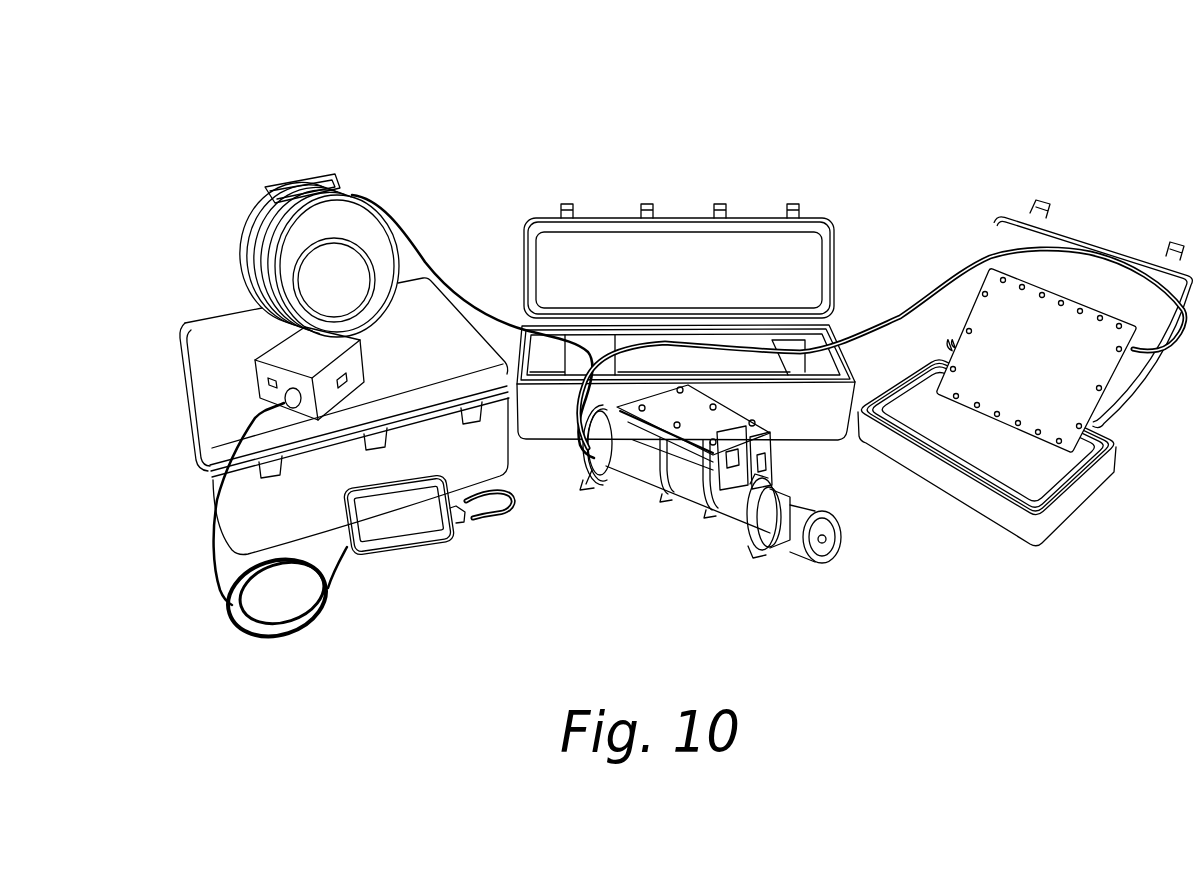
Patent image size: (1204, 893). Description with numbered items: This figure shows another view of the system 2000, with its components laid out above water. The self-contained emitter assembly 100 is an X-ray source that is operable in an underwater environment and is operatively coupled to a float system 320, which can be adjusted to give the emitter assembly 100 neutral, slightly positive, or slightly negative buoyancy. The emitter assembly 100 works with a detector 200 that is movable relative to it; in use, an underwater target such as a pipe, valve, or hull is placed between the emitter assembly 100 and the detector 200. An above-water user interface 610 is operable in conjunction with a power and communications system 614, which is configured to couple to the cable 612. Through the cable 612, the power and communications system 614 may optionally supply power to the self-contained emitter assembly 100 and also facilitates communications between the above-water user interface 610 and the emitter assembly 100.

The system 2000 is at (688, 140).
The cable 612 is at (423, 262).
The power and communications system 614 is at (273, 370).
The above-water user interface 610 is at (397, 527).
The float system 320 is at (715, 427).
The self-contained emitter assembly 100 is at (790, 547).
The detector 200 is at (995, 392).